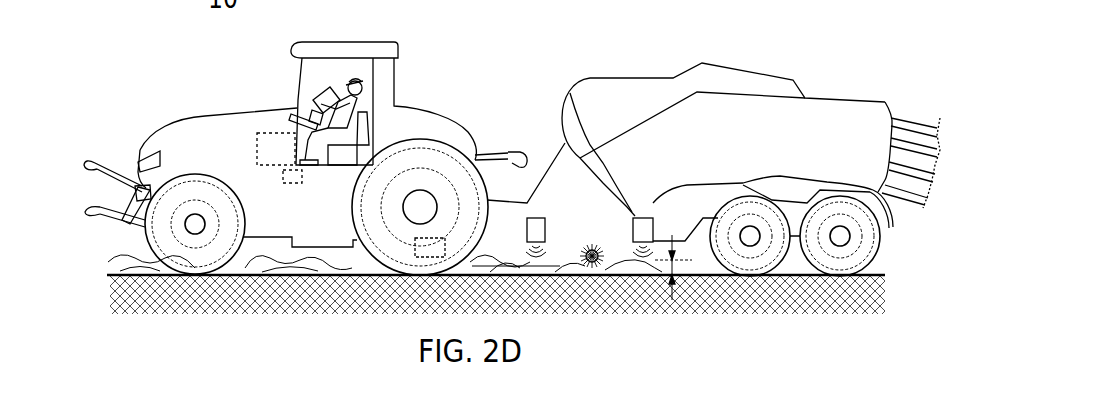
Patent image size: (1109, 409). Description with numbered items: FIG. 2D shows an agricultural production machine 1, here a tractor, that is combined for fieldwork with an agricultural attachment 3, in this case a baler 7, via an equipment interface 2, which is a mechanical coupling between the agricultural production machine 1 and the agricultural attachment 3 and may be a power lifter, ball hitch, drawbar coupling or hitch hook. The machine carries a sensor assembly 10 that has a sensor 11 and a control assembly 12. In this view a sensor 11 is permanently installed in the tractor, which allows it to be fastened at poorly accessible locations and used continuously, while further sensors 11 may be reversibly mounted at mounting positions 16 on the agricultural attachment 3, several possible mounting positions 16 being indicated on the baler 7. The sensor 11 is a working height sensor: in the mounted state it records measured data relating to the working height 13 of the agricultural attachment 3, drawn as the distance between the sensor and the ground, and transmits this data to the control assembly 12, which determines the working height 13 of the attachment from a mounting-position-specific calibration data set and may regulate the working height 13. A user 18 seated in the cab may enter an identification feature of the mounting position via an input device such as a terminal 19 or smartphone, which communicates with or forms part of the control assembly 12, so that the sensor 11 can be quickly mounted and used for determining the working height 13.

The agricultural production machine 1 is at (177, 132).
The equipment interface 2 is at (500, 140).
The agricultural attachment 3 is at (751, 150).
The baler 7 is at (672, 90).
The sensor assembly 10 is at (628, 217).
The sensor 11 is at (542, 213).
The control assembly 12 is at (272, 148).
The working height 13 is at (676, 263).
The mounting position 16 is at (612, 200).
The user 18 is at (358, 85).
The terminal 19 is at (317, 92).